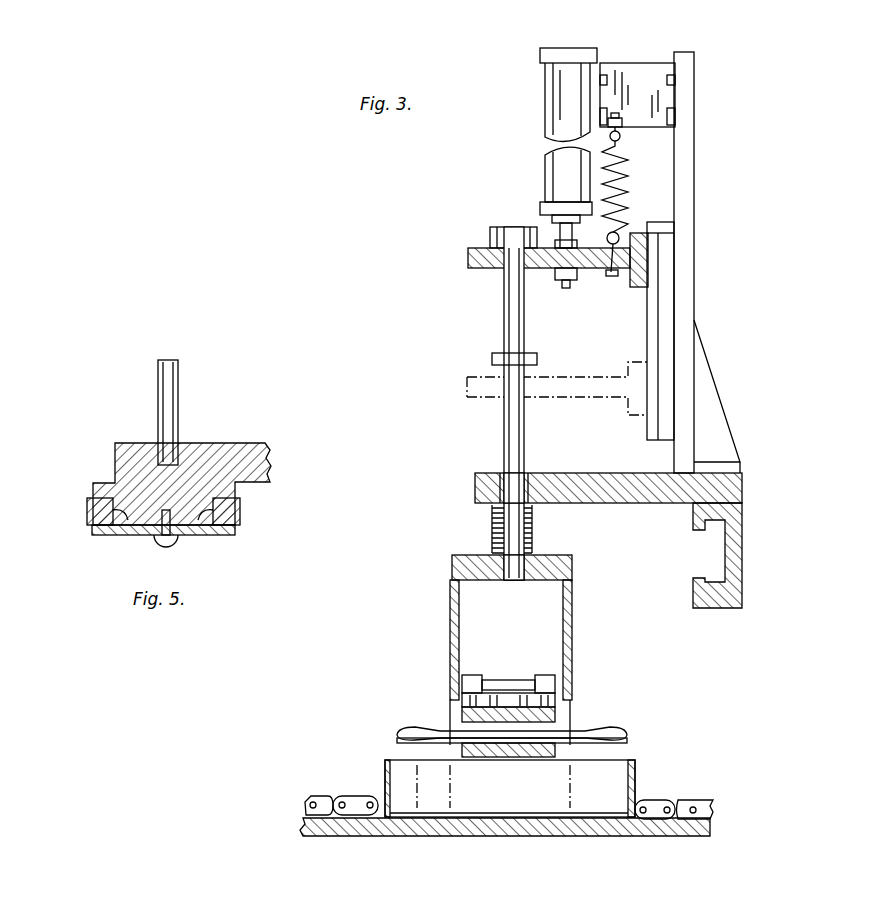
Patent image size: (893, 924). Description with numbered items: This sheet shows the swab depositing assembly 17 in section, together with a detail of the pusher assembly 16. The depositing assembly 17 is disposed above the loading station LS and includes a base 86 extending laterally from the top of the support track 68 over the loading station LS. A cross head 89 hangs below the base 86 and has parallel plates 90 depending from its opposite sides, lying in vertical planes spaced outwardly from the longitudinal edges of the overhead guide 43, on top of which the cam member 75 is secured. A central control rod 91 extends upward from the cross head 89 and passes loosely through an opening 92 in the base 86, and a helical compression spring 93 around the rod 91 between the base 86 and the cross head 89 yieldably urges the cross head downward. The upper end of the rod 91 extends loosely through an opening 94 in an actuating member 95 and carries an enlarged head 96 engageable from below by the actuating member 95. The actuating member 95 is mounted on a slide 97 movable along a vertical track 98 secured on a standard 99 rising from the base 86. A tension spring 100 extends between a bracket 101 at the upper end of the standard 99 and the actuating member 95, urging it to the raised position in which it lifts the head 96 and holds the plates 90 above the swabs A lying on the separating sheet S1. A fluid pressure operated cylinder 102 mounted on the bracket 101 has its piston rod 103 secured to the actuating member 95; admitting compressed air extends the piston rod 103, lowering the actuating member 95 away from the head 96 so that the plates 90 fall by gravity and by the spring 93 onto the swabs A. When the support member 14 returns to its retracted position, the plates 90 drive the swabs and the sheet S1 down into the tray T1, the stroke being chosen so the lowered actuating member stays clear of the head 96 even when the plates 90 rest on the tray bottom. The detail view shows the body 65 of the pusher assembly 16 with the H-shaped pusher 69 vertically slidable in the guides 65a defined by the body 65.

In FIG. 3, the bracket 101 is at (642, 63).
In FIG. 3, the fluid pressure operated cylinder 102 is at (549, 98).
In FIG. 3, the piston rod 103 is at (552, 217).
In FIG. 3, the tension spring 100 is at (622, 183).
In FIG. 3, the enlarged head 96 is at (527, 230).
In FIG. 3, the actuating member 95 is at (468, 258).
In FIG. 3, the slide 97 is at (645, 289).
In FIG. 3, the vertical track 98 is at (654, 315).
In FIG. 3, the standard 99 is at (680, 359).
In FIG. 3, the swab depositing assembly 17 is at (498, 403).
In FIG. 3, the central control rod 91 is at (517, 321).
In FIG. 3, the opening 94 is at (510, 263).
In FIG. 3, the base 86 is at (608, 476).
In FIG. 3, the opening 92 is at (537, 480).
In FIG. 3, the support track 68 is at (745, 554).
In FIG. 3, the helical compression spring 93 is at (535, 521).
In FIG. 3, the cross head 89 is at (553, 557).
In FIG. 3, the parallel plates 90 is at (450, 612).
In FIG. 3, the cam member 75 is at (553, 682).
In FIG. 3, the overhead guide member 43 is at (562, 718).
In FIG. 3, the swabs A is at (413, 723).
In FIG. 3, the separating sheet S1 is at (398, 744).
In FIG. 3, the support member 14 is at (498, 749).
In FIG. 3, the loading station LS is at (640, 768).
In FIG. 3, the tray T1 is at (545, 822).
In FIG. 5, the pusher assembly 16 is at (163, 464).
In FIG. 5, the body 65 is at (125, 455).
In FIG. 5, the pusher 69 is at (86, 523).
In FIG. 5, the guides 65a is at (128, 533).